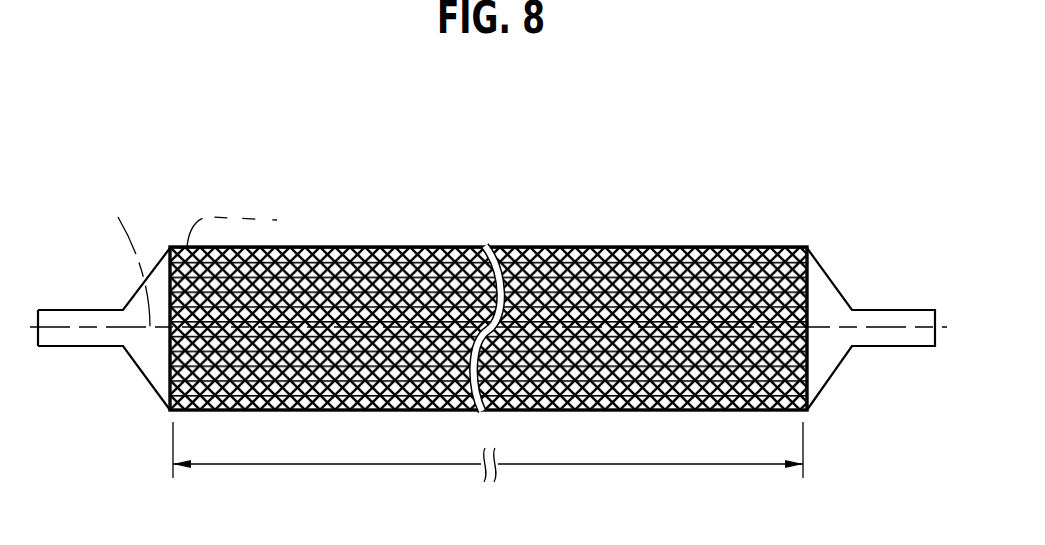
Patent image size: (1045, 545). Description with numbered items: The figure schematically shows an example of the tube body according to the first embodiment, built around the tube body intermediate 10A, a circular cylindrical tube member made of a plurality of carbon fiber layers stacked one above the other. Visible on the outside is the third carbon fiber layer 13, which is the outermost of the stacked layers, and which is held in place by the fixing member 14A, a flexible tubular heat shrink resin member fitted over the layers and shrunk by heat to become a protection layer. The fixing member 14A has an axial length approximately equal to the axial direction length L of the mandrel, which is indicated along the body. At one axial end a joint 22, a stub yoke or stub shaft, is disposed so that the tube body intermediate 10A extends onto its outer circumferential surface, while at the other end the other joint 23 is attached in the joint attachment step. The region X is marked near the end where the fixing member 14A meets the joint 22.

The tube body intermediate 10A is at (488, 288).
The third carbon fiber layer 13 is at (393, 247).
The fixing member 14A is at (277, 220).
The joint 22 is at (87, 317).
The joint 23 is at (887, 318).
The region X is at (131, 257).
The axial direction length L is at (488, 470).